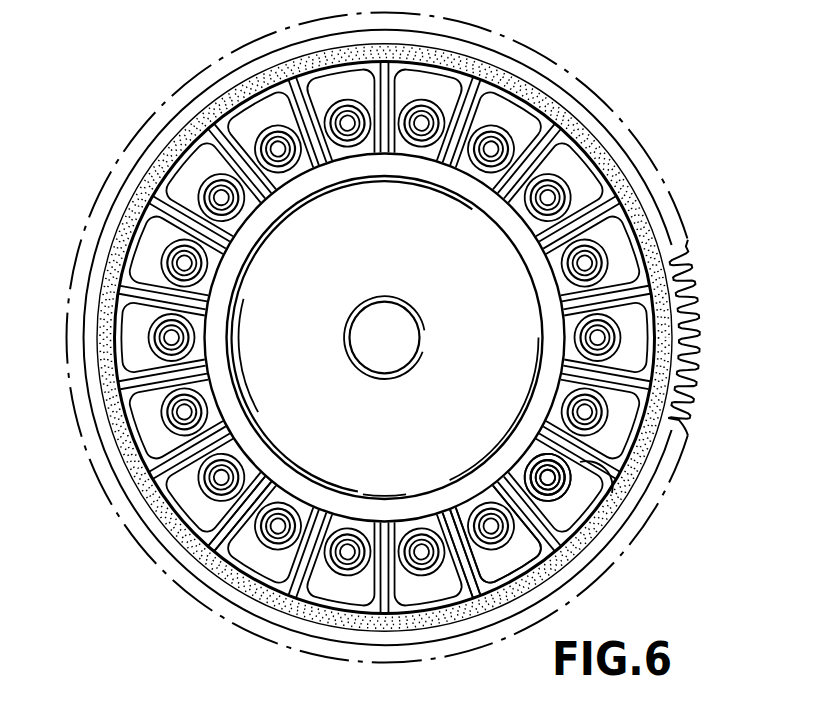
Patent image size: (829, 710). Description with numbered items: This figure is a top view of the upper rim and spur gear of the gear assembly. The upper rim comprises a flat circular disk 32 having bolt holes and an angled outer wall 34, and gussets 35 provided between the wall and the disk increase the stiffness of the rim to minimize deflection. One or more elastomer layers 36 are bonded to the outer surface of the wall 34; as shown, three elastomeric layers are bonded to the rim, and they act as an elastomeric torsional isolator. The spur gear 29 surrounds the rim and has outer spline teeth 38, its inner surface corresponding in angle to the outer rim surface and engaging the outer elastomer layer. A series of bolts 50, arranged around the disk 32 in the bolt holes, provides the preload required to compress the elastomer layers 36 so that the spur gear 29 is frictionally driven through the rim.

The spur gear 29 is at (682, 378).
The flat circular disk 32 is at (235, 542).
The angled outer wall 34 is at (478, 587).
The gussets 35 is at (607, 488).
The elastomer layers 36 is at (563, 562).
The outer spline teeth 38 is at (703, 353).
The bolts 50 is at (563, 491).